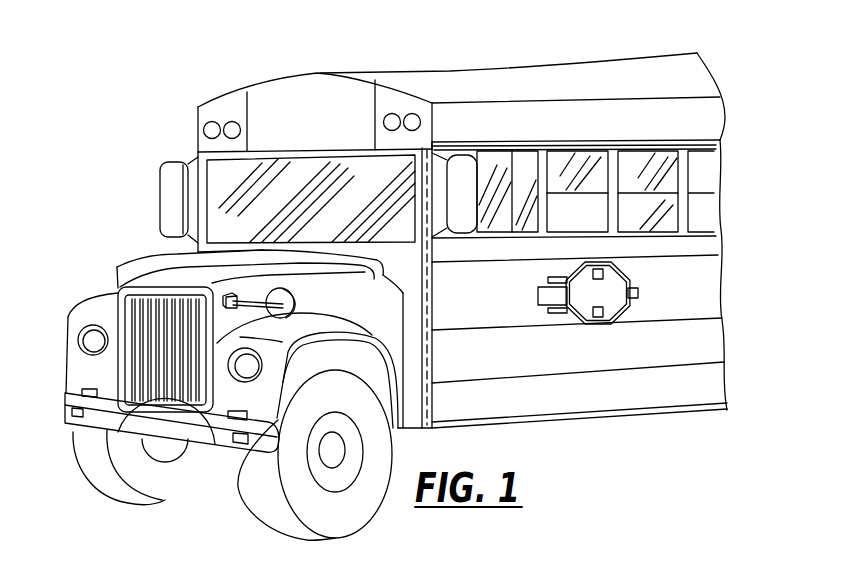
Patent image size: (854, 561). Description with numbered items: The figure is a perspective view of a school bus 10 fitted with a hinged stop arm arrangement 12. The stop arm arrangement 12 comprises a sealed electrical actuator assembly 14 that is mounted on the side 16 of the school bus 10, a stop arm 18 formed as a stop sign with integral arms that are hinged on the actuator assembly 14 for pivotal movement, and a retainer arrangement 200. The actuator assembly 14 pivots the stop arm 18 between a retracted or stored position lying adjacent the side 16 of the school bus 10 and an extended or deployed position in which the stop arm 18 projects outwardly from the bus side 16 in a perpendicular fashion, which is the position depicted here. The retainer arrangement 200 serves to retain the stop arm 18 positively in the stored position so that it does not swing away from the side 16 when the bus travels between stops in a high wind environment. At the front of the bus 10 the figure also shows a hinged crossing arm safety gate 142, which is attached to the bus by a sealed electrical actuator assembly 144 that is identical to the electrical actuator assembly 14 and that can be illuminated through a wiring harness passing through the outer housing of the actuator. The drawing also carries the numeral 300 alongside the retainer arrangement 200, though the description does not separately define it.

The school bus 10 is at (641, 55).
The stop arm arrangement 12 is at (627, 304).
The sealed electrical actuator assembly 14 is at (538, 297).
The side of the school bus 16 is at (611, 357).
The stop arm 18 is at (621, 277).
The hinged crossing arm safety gate 142 is at (112, 418).
The sealed electrical actuator assembly 144 is at (73, 410).
The retainer arrangement 200 is at (452, 417).
The camera unit 300 is at (639, 293).